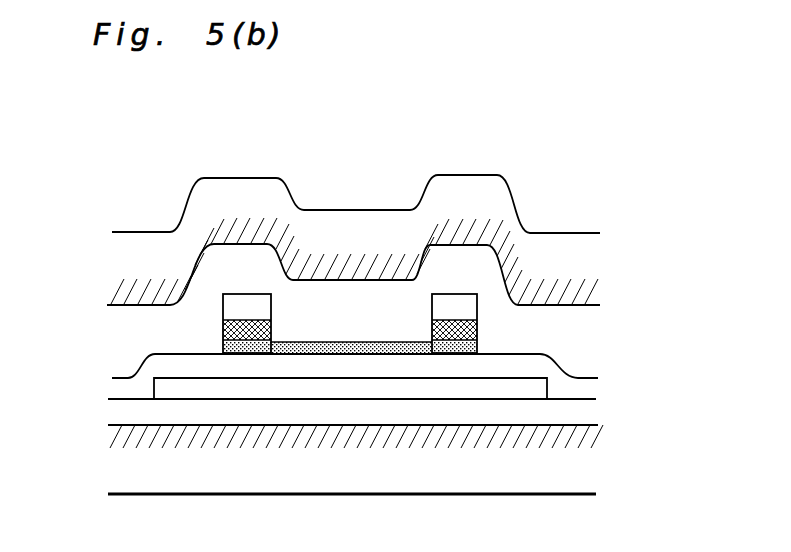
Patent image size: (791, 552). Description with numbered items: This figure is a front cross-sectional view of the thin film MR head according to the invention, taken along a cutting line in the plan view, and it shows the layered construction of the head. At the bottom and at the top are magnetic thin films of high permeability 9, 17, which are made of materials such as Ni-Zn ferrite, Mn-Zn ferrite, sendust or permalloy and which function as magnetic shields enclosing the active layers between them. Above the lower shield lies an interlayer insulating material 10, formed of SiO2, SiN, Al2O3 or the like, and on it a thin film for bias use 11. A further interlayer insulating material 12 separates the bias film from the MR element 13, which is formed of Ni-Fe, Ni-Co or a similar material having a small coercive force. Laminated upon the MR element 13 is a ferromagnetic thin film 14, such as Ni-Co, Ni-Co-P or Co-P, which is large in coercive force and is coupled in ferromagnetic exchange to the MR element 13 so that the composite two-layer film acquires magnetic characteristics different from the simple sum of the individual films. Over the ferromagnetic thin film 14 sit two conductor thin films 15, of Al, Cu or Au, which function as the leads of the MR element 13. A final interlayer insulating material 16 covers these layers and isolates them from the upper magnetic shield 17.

The magnetic thin film of high permeability 9 is at (548, 463).
The interlayer insulating material 10 is at (562, 411).
The thin film for bias use 11 is at (547, 386).
The interlayer insulating material 12 is at (547, 365).
The MR element 13 is at (236, 353).
The ferromagnetic thin film 14 is at (223, 332).
The conductor thin film 15 is at (238, 305).
The interlayer insulating material 16 is at (553, 327).
The magnetic thin film of high permeability 17 is at (567, 263).